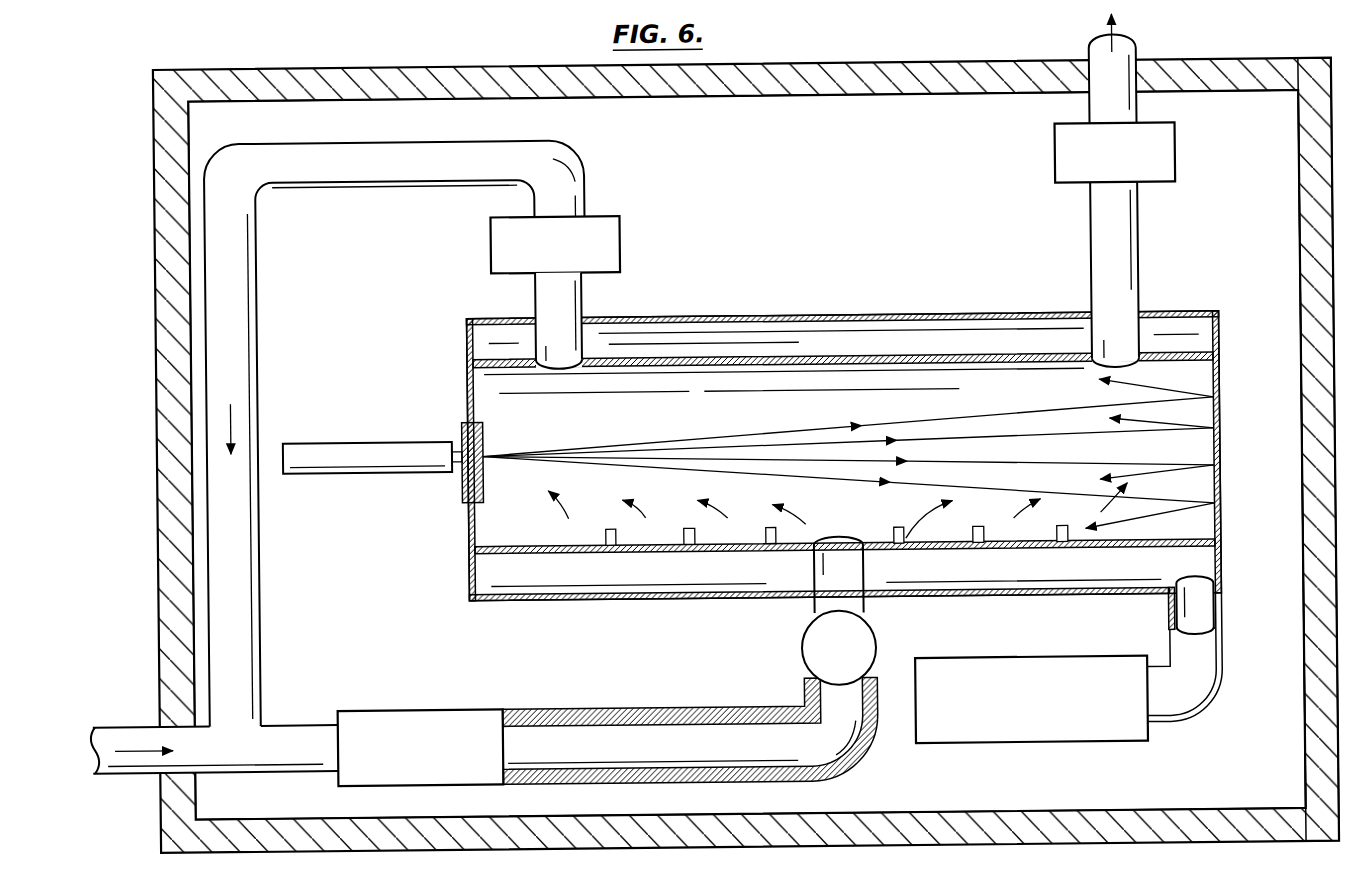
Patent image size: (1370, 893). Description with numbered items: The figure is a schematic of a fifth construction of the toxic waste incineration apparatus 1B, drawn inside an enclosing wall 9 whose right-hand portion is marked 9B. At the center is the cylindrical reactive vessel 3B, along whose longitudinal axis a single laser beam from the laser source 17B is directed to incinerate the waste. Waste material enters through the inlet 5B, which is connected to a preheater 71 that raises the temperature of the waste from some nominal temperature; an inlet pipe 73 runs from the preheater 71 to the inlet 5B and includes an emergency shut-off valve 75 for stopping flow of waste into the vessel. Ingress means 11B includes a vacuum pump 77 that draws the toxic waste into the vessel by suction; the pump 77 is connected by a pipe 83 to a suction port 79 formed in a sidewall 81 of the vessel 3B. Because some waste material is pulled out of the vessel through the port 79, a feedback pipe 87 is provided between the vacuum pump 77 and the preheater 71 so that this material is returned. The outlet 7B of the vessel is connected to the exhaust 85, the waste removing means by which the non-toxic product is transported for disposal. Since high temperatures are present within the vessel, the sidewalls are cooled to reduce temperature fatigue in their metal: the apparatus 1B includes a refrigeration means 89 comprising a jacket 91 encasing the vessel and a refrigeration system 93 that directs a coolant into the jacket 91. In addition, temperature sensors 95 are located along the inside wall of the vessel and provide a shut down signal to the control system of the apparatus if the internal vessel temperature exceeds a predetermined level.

The apparatus 1B is at (140, 383).
The reactive vessel 3B is at (776, 430).
The inlet 5B is at (103, 730).
The outlet 7B is at (1118, 328).
The outer enclosure wall 9 is at (492, 73).
The enclosure wall 9B is at (1333, 274).
The ingress means 11B is at (698, 241).
The laser source 17B is at (357, 448).
The preheater 71 is at (438, 713).
The inlet pipe 73 is at (603, 738).
The emergency shut-off valve 75 is at (875, 650).
The vacuum pump 77 is at (624, 243).
The suction port 79 is at (562, 372).
The sidewall 81 is at (697, 346).
The pipe 83 is at (585, 311).
The exhaust 85 is at (1058, 181).
The feedback pipe 87 is at (245, 325).
The refrigeration means 89 is at (1232, 648).
The jacket 91 is at (865, 322).
The refrigeration system 93 is at (997, 666).
The temperature sensors 95 is at (607, 533).